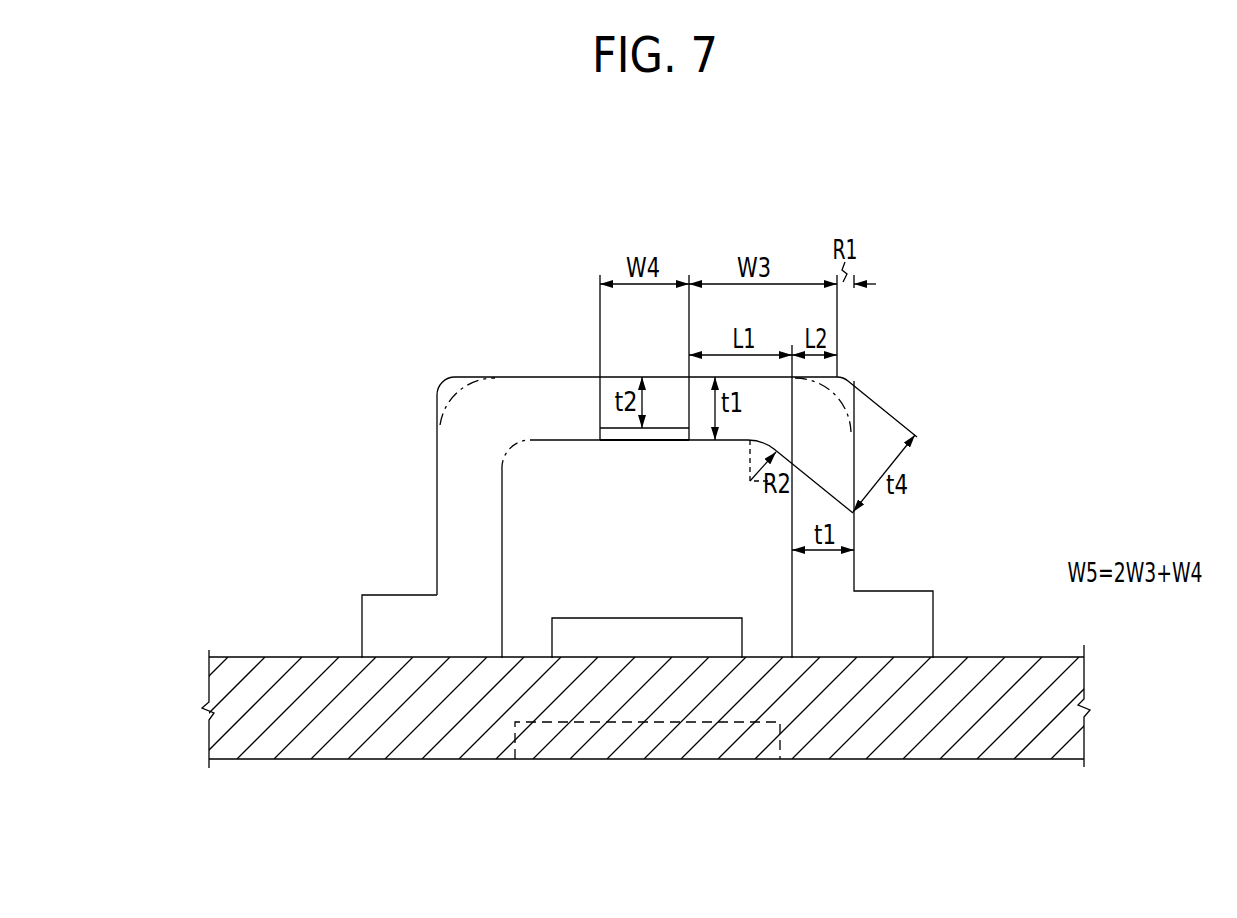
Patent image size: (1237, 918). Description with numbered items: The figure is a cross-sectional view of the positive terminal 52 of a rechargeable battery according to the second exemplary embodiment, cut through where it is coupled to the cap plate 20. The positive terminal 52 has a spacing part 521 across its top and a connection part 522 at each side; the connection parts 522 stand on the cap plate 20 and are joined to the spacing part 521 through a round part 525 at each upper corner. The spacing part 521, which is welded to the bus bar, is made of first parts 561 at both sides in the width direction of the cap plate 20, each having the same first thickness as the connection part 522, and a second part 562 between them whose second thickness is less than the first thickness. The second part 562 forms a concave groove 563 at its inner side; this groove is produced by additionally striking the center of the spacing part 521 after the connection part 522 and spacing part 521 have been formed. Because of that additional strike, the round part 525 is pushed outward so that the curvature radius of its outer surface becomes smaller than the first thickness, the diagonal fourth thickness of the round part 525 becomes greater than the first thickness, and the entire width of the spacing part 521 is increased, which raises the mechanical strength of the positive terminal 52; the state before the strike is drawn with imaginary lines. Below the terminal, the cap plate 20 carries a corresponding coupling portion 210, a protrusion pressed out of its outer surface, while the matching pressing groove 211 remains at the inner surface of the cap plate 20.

The positive terminal 52 is at (664, 233).
The spacing part 521 is at (491, 373).
The connection part 522 is at (838, 566).
The round part 525 is at (858, 378).
The first part 561 is at (528, 394).
The second part 562 is at (672, 394).
The concave groove 563 is at (620, 436).
The corresponding coupling portion 210 is at (598, 632).
The pressing groove 211 is at (690, 761).
The cap plate 20 is at (1027, 687).